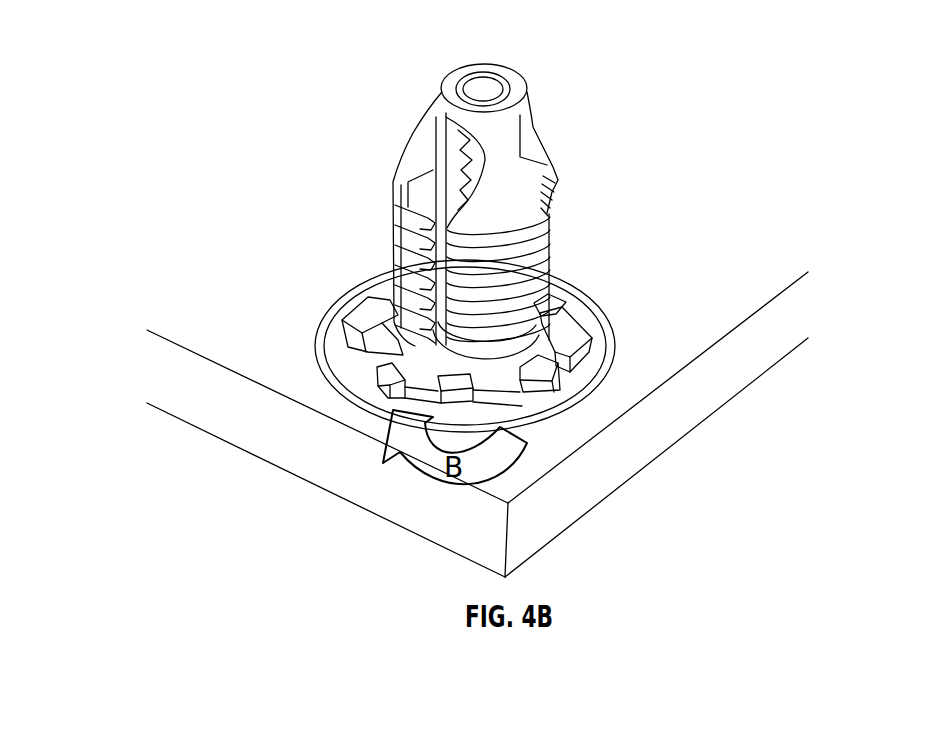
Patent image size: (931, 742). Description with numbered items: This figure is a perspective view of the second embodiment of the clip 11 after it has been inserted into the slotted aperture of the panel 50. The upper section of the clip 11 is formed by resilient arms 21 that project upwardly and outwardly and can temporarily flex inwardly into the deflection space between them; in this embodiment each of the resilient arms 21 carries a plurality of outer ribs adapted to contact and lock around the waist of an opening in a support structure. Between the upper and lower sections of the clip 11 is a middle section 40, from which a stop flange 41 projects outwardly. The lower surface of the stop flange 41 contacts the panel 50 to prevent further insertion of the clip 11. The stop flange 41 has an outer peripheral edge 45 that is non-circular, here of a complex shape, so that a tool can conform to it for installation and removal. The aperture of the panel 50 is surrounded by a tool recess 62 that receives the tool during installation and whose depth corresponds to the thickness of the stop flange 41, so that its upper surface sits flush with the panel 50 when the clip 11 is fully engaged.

The clip 11 is at (518, 111).
The resilient arms 21 is at (513, 203).
The middle section 40 is at (597, 356).
The stop flange 41 is at (575, 330).
The outer peripheral edge 45 is at (370, 342).
The panel 50 is at (302, 348).
The tool recess 62 is at (348, 372).